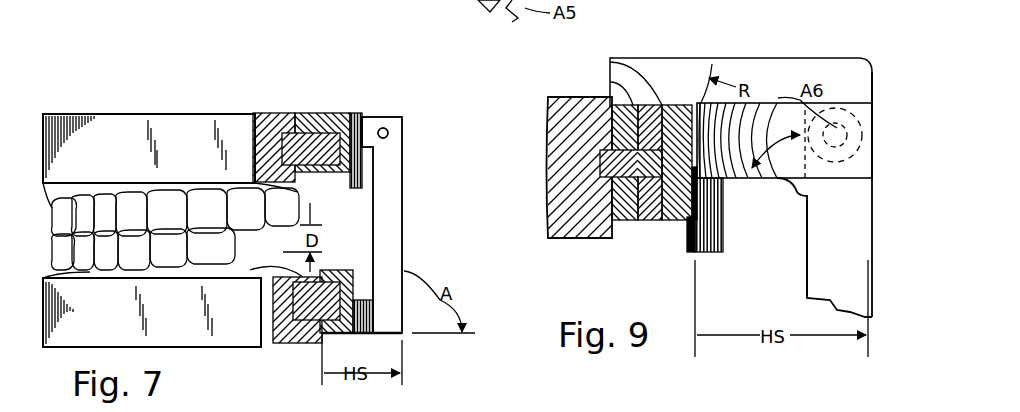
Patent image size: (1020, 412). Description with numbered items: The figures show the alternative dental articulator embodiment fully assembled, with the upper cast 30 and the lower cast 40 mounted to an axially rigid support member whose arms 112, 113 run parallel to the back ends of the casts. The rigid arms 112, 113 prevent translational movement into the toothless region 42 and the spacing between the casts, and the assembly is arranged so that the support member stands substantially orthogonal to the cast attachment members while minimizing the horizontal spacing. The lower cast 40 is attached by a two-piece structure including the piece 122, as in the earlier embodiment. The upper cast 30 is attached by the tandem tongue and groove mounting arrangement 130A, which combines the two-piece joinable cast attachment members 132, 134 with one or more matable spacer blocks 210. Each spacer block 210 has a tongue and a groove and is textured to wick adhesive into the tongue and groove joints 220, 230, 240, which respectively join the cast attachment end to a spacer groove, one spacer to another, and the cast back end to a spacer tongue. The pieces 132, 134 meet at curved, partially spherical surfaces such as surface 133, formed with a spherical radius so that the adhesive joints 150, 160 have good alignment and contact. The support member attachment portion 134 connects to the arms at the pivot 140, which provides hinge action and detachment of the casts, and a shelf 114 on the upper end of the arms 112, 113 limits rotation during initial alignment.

In FIG. 7, the upper cast 30 is at (132, 158).
In FIG. 7, the lower cast 40 is at (121, 320).
In FIG. 7, the toothless region 42 is at (248, 238).
In FIG. 7, the arm 112 is at (402, 200).
In FIG. 9, the arm 112 is at (806, 258).
In FIG. 7, the arm 113 is at (402, 200).
In FIG. 9, the arm 113 is at (806, 258).
In FIG. 7, the two-piece joinable structure 122 is at (404, 352).
In FIG. 9, the two-piece joinable cast attachment member 132 is at (678, 105).
In FIG. 9, the curved partially spherical surface 133 is at (712, 215).
In FIG. 9, the support member attachment portion 134 is at (730, 180).
In FIG. 9, the shelf 114 is at (792, 162).
In FIG. 9, the pivot 140 is at (784, 117).
In FIG. 9, the joint 150 is at (692, 105).
In FIG. 9, the joint 160 is at (447, 3).
In FIG. 9, the spacer block 210 is at (645, 220).
In FIG. 9, the tongue and groove joint 220 is at (611, 59).
In FIG. 9, the tongue and groove joint 230 is at (610, 80).
In FIG. 9, the tongue and groove joint 240 is at (612, 238).
In FIG. 9, the tandem tongue and groove mounting arrangement 130A is at (778, 50).